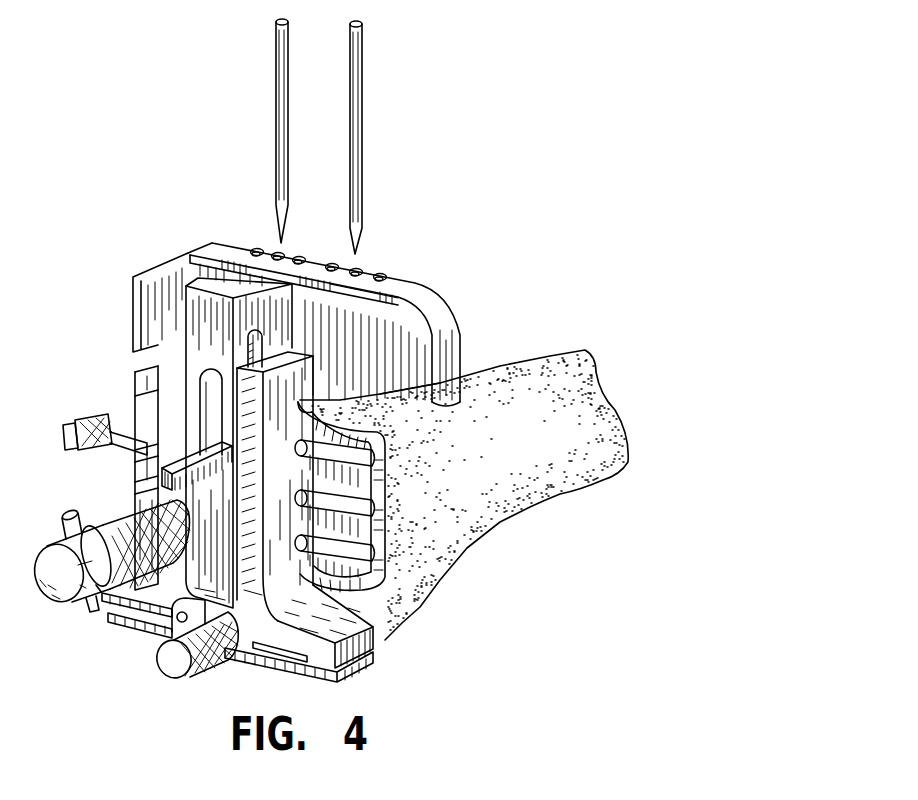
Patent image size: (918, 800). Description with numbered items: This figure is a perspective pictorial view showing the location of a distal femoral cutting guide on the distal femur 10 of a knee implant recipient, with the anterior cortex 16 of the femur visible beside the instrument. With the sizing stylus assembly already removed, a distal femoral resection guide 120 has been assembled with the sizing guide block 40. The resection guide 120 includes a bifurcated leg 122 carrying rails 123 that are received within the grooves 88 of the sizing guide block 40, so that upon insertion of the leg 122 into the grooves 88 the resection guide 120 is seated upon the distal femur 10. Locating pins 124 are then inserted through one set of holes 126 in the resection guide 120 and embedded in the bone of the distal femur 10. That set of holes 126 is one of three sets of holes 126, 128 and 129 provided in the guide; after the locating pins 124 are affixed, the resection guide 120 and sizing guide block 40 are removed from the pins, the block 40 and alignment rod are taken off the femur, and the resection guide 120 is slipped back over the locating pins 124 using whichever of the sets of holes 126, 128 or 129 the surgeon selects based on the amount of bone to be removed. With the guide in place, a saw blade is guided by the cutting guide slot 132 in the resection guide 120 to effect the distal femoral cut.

The distal femur 10 is at (530, 514).
The anterior cortex 16 is at (375, 410).
The sizing guide block 40 is at (403, 443).
The grooves 88 is at (263, 343).
The distal femoral resection guide 120 is at (324, 284).
The bifurcated leg 122 is at (198, 308).
The rails 123 is at (382, 292).
The locating pins 124 is at (277, 73).
The set of holes 126 is at (272, 248).
The set of holes 128 is at (253, 248).
The set of holes 129 is at (283, 204).
The cutting guide slot 132 is at (425, 285).